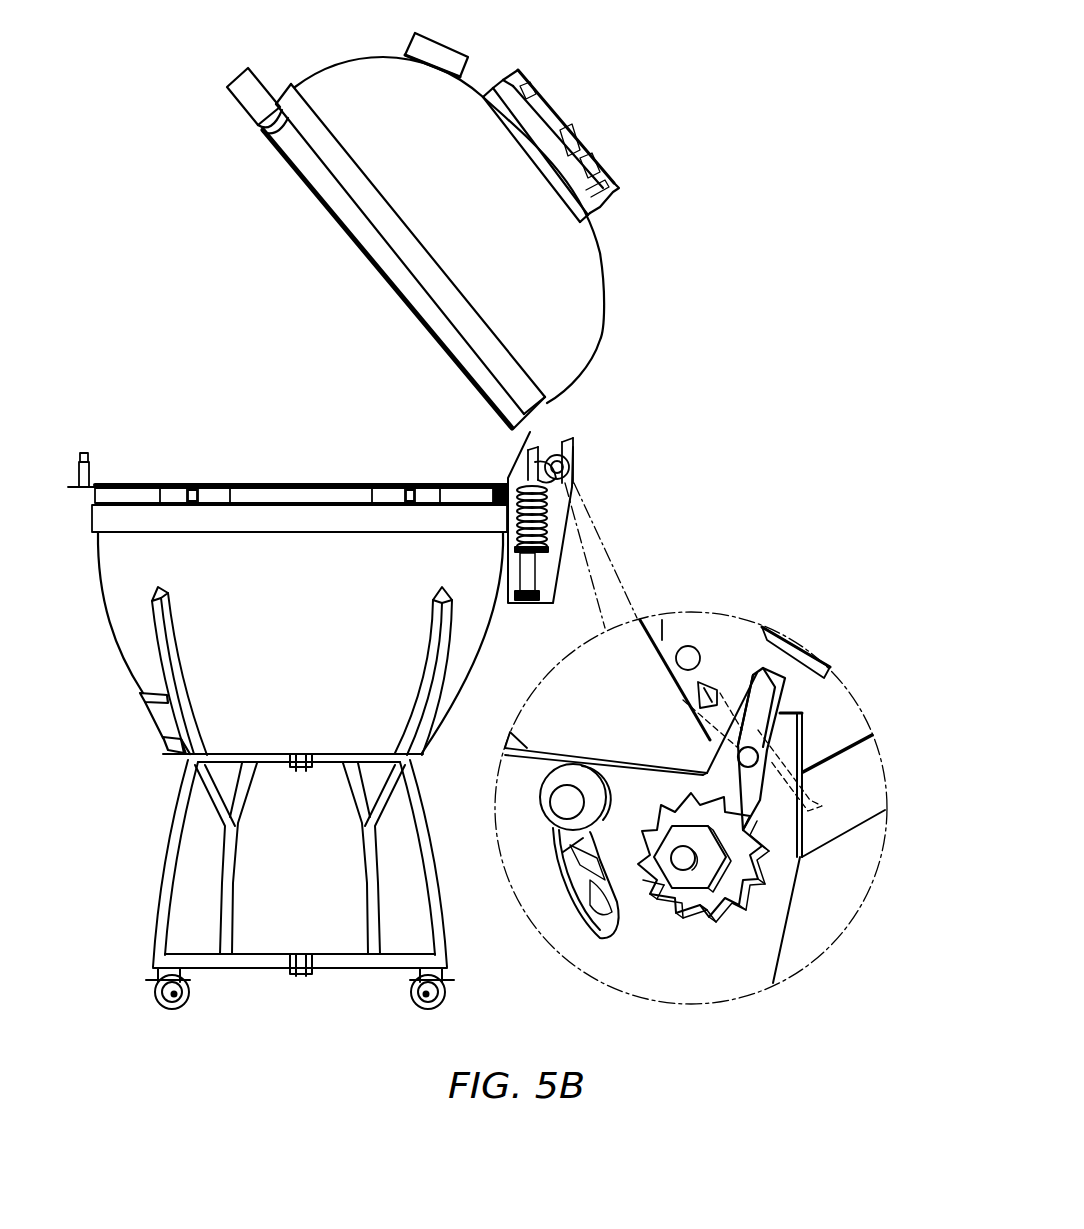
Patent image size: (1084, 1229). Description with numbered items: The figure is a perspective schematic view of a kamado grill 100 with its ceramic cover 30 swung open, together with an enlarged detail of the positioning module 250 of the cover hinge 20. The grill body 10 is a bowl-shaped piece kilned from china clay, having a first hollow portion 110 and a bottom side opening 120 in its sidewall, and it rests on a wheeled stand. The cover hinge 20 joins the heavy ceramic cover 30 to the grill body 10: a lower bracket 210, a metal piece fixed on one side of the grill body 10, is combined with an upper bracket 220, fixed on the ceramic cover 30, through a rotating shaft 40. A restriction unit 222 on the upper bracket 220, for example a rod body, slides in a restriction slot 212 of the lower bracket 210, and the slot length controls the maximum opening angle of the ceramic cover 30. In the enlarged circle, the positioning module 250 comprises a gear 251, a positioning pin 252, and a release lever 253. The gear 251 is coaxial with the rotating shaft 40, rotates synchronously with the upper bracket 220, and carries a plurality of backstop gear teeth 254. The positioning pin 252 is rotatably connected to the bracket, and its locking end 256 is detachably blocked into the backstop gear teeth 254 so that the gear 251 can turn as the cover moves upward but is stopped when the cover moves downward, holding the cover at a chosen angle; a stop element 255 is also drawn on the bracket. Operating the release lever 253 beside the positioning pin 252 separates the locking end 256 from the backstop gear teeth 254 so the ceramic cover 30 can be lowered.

The kamado grill 100 is at (706, 45).
The grill body 10 is at (118, 578).
The cover hinge 20 is at (575, 488).
The ceramic cover 30 is at (600, 270).
The rotating shaft 40 is at (551, 458).
The first hollow portion 110 is at (258, 448).
The bottom side opening 120 is at (165, 722).
The lower bracket 210 is at (620, 978).
The restriction slot 212 is at (567, 882).
The upper bracket 220 is at (553, 700).
The restriction unit 222 is at (566, 808).
The positioning module 250 is at (583, 458).
The gear 251 is at (730, 878).
The positioning pin 252 is at (800, 795).
The release lever 253 is at (762, 685).
The backstop gear teeth 254 is at (705, 920).
The stop bar 255 is at (810, 745).
The locking end 256 is at (800, 850).